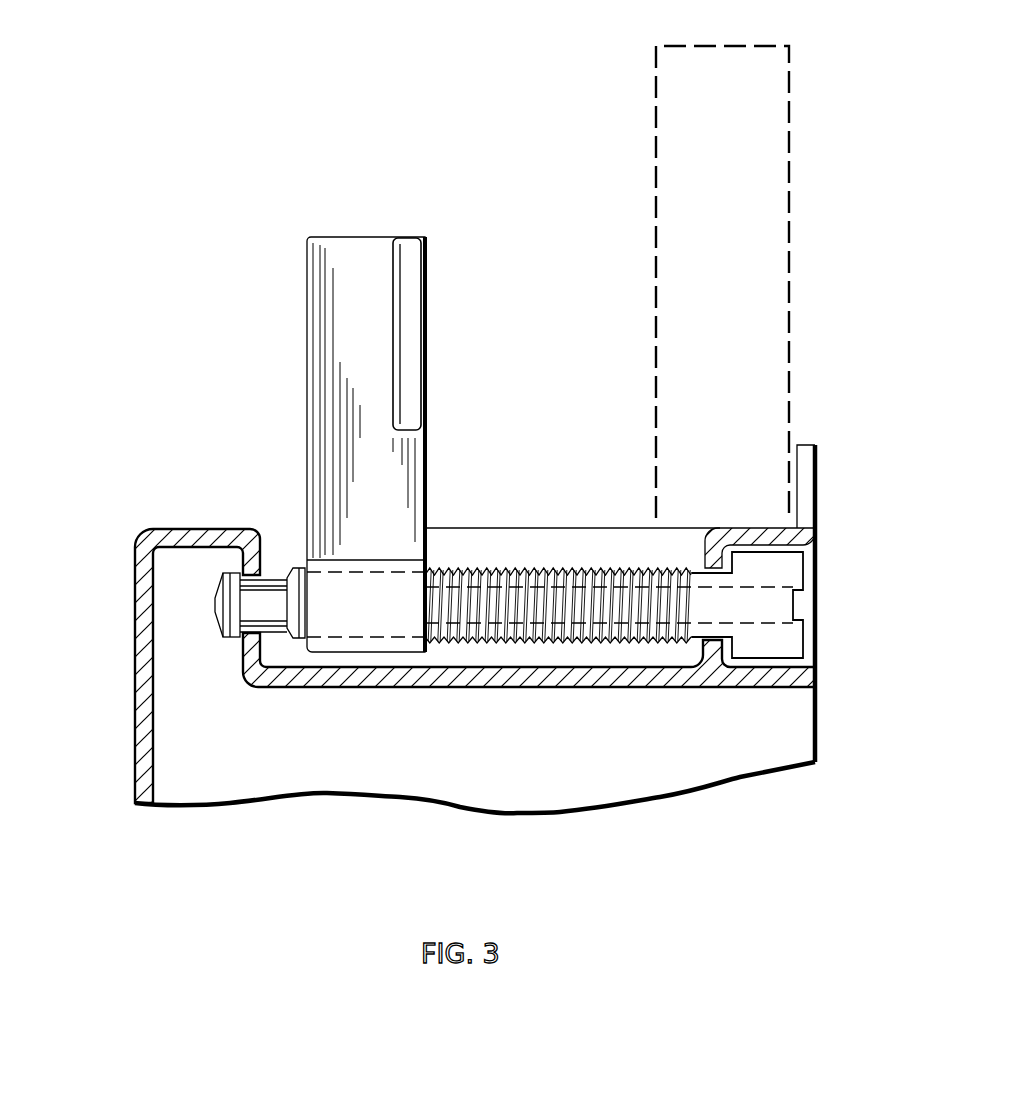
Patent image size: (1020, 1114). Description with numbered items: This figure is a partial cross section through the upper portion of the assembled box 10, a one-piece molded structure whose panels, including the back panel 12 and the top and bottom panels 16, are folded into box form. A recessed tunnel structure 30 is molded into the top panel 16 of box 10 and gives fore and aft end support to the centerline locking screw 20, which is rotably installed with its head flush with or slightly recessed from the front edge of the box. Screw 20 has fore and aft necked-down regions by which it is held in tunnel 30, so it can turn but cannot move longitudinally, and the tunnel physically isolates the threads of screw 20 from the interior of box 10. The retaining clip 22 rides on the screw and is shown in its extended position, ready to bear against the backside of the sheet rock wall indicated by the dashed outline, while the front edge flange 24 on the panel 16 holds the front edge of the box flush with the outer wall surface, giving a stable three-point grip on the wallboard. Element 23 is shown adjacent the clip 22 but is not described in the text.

The box 10 is at (146, 190).
The back panel 12 is at (136, 661).
The top and bottom panels 16 is at (570, 528).
The screw 20 is at (795, 570).
The retaining clip 22 is at (348, 313).
The slot 23 is at (428, 318).
The front edge flange 24 is at (818, 457).
The tunnel structure 30 is at (747, 687).